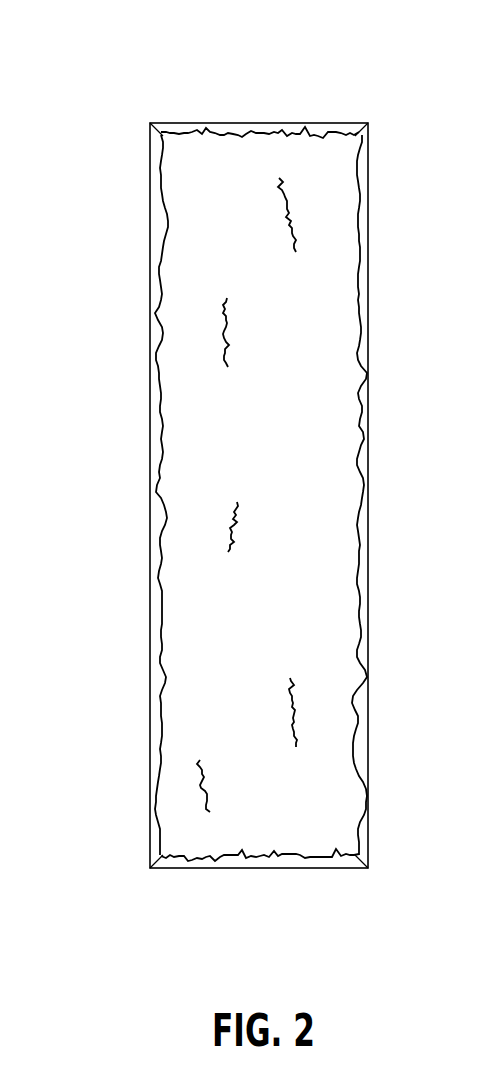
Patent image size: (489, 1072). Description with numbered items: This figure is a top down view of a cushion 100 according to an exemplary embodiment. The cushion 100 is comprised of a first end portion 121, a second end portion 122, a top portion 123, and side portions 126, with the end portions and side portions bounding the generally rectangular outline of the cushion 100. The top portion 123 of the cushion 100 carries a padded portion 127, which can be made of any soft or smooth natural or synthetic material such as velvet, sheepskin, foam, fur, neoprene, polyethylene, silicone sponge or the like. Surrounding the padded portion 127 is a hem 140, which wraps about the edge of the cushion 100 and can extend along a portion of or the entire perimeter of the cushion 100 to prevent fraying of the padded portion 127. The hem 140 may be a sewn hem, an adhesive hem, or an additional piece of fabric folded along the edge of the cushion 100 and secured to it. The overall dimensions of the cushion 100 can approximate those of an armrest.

The cushion 100 is at (122, 99).
The first end portion 121 is at (350, 131).
The second end portion 122 is at (250, 838).
The top portion 123 is at (253, 465).
The side portions 126 is at (345, 360).
The padded portion 127 is at (235, 644).
The hem 140 is at (363, 563).